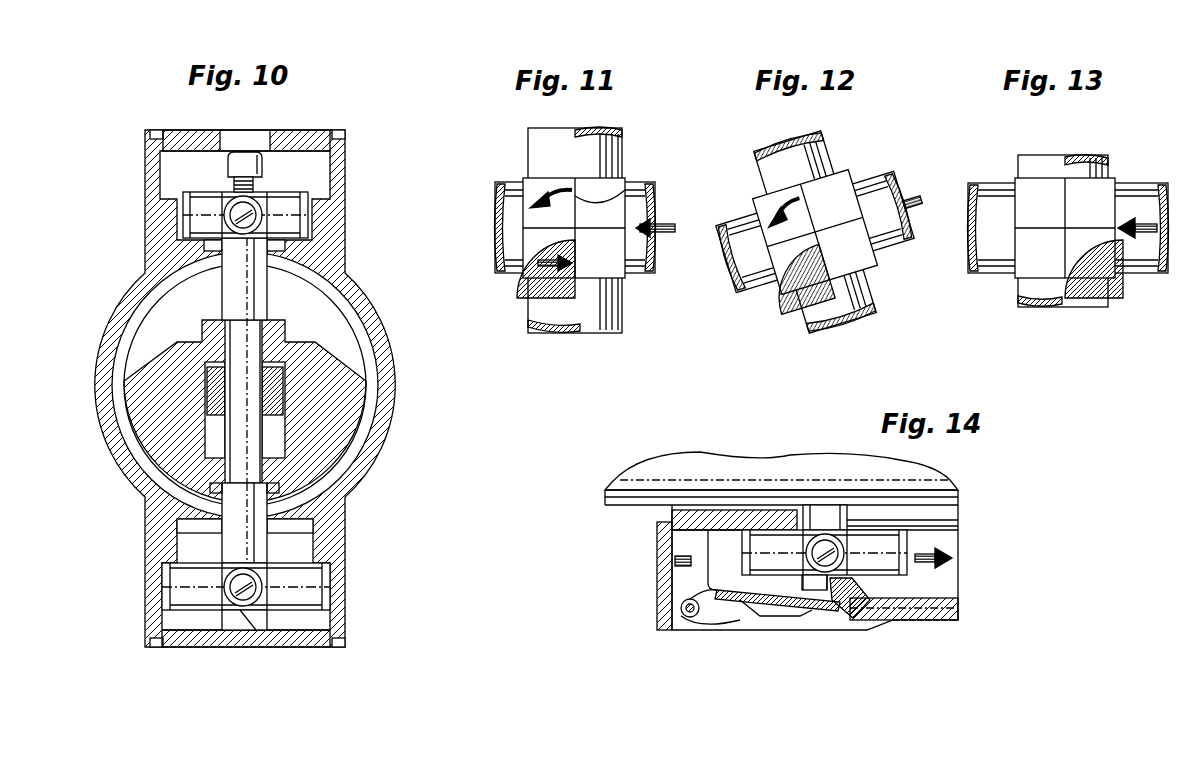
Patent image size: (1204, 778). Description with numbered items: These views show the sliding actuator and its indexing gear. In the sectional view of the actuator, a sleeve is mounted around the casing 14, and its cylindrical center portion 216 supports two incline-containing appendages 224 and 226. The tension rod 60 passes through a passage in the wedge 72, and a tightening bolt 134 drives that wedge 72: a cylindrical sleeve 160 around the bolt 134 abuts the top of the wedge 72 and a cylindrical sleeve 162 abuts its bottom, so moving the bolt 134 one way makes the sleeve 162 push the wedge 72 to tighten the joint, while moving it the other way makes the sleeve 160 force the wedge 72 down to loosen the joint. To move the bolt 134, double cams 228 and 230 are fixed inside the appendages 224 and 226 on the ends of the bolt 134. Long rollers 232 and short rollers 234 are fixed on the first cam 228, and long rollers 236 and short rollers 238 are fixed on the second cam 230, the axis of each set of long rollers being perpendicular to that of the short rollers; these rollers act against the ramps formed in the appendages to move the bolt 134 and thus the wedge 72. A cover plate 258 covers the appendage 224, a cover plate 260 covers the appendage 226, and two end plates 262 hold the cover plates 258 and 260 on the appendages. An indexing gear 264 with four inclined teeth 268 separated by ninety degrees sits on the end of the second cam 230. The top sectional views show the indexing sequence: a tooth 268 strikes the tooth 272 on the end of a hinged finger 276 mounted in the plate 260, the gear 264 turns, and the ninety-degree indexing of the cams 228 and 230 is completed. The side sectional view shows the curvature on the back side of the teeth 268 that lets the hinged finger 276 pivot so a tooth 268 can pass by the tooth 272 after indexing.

In FIG. 10, the casing 14 is at (390, 380).
In FIG. 14, the casing 14 is at (943, 480).
In FIG. 10, the tension rod 60 is at (273, 385).
In FIG. 10, the wedge 72 is at (157, 430).
In FIG. 10, the tightening bolt 134 is at (247, 442).
In FIG. 10, the cylindrical sleeve 160 is at (245, 302).
In FIG. 10, the cylindrical sleeve 162 is at (230, 492).
In FIG. 10, the cylindrical center portion 216 is at (100, 333).
In FIG. 10, the appendage 224 is at (148, 192).
In FIG. 10, the appendage 226 is at (145, 558).
In FIG. 14, the appendage 226 is at (948, 577).
In FIG. 10, the double cam 228 is at (222, 182).
In FIG. 10, the double cam 230 is at (284, 554).
In FIG. 14, the double cam 230 is at (795, 512).
In FIG. 10, the long rollers 232 is at (257, 200).
In FIG. 10, the short rollers 234 is at (290, 195).
In FIG. 10, the long rollers 236 is at (303, 581).
In FIG. 11, the long rollers 236 is at (593, 150).
In FIG. 12, the long rollers 236 is at (743, 170).
In FIG. 13, the long rollers 236 is at (992, 185).
In FIG. 14, the long rollers 236 is at (760, 537).
In FIG. 10, the short rollers 238 is at (262, 592).
In FIG. 11, the short rollers 238 is at (640, 248).
In FIG. 12, the short rollers 238 is at (858, 175).
In FIG. 13, the short rollers 238 is at (1038, 160).
In FIG. 14, the short rollers 238 is at (827, 528).
In FIG. 10, the cover plate 258 is at (295, 130).
In FIG. 10, the cover plate 260 is at (235, 640).
In FIG. 14, the cover plate 260 is at (958, 608).
In FIG. 14, the end plates 262 is at (657, 580).
In FIG. 10, the indexing gear 264 is at (208, 618).
In FIG. 11, the indexing gear 264 is at (517, 166).
In FIG. 12, the indexing gear 264 is at (826, 162).
In FIG. 13, the indexing gear 264 is at (1124, 191).
In FIG. 14, the indexing gear 264 is at (810, 583).
In FIG. 10, the inclined teeth 268 is at (255, 620).
In FIG. 11, the inclined teeth 268 is at (598, 225).
In FIG. 14, the inclined teeth 268 is at (833, 597).
In FIG. 11, the tooth 272 is at (575, 293).
In FIG. 12, the tooth 272 is at (822, 295).
In FIG. 13, the tooth 272 is at (1113, 298).
In FIG. 14, the tooth 272 is at (853, 583).
In FIG. 14, the hinged finger 276 is at (768, 605).